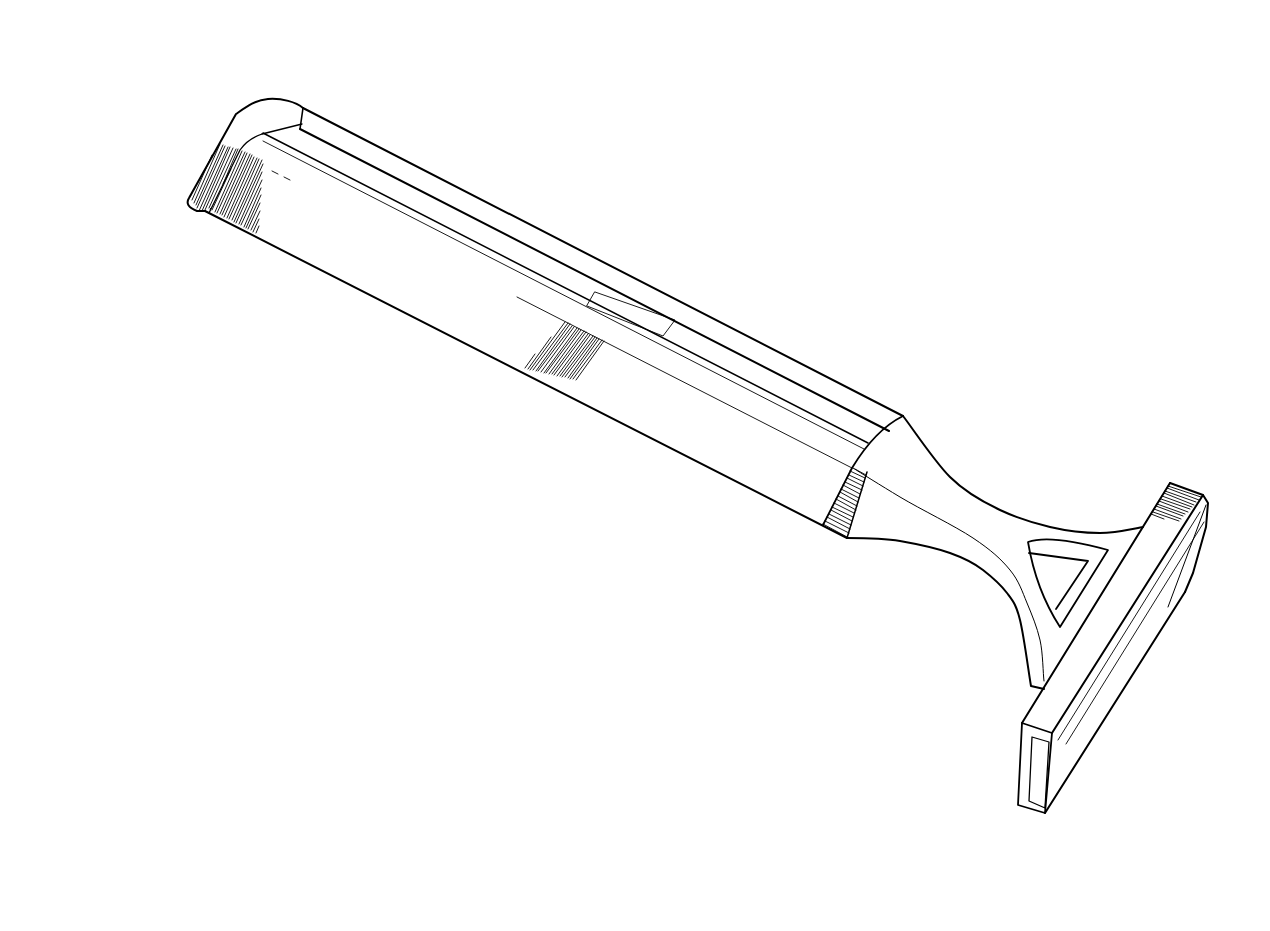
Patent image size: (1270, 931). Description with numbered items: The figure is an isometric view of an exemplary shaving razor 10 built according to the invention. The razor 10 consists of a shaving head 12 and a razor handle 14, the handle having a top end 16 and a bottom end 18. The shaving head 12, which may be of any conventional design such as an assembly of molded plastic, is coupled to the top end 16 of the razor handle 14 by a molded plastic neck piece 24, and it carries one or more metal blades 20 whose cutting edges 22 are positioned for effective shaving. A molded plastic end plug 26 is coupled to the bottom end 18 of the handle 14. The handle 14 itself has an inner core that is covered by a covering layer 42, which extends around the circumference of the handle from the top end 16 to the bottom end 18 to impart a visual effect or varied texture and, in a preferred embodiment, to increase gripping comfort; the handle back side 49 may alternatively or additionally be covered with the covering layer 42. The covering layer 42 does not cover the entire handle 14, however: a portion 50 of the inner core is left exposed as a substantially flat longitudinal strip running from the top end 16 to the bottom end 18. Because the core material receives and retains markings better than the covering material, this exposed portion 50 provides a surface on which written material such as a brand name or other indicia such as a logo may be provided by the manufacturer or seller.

The razor 10 is at (742, 217).
The shaving head 12 is at (1147, 505).
The razor handle 14 is at (451, 176).
The top end 16 is at (903, 418).
The bottom end 18 is at (312, 95).
The metal blades 20 is at (1100, 737).
The cutting edges 22 is at (1133, 671).
The neck piece 24 is at (1026, 515).
The end plug 26 is at (247, 112).
The covering layer 42 is at (515, 358).
The handle back side 49 is at (527, 258).
The exposed portion 50 is at (590, 290).